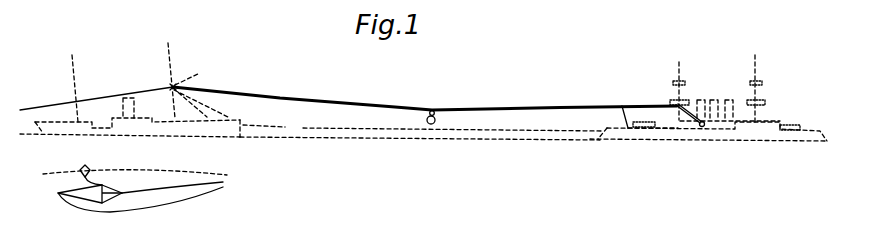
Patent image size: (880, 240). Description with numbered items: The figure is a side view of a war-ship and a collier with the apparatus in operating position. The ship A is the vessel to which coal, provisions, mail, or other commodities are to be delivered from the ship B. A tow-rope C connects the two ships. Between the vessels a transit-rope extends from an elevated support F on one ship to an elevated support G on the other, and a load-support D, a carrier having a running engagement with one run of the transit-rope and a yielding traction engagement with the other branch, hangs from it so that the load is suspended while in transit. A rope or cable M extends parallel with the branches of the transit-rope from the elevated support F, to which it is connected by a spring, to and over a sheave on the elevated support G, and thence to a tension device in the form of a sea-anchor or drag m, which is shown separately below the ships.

The ship A is at (708, 114).
The ship B is at (130, 97).
The tow-rope C is at (421, 129).
The load-support D is at (433, 107).
The elevated support F is at (675, 105).
The elevated support G is at (174, 86).
The rope or cable M is at (395, 107).
The sea-anchor or drag m is at (135, 188).